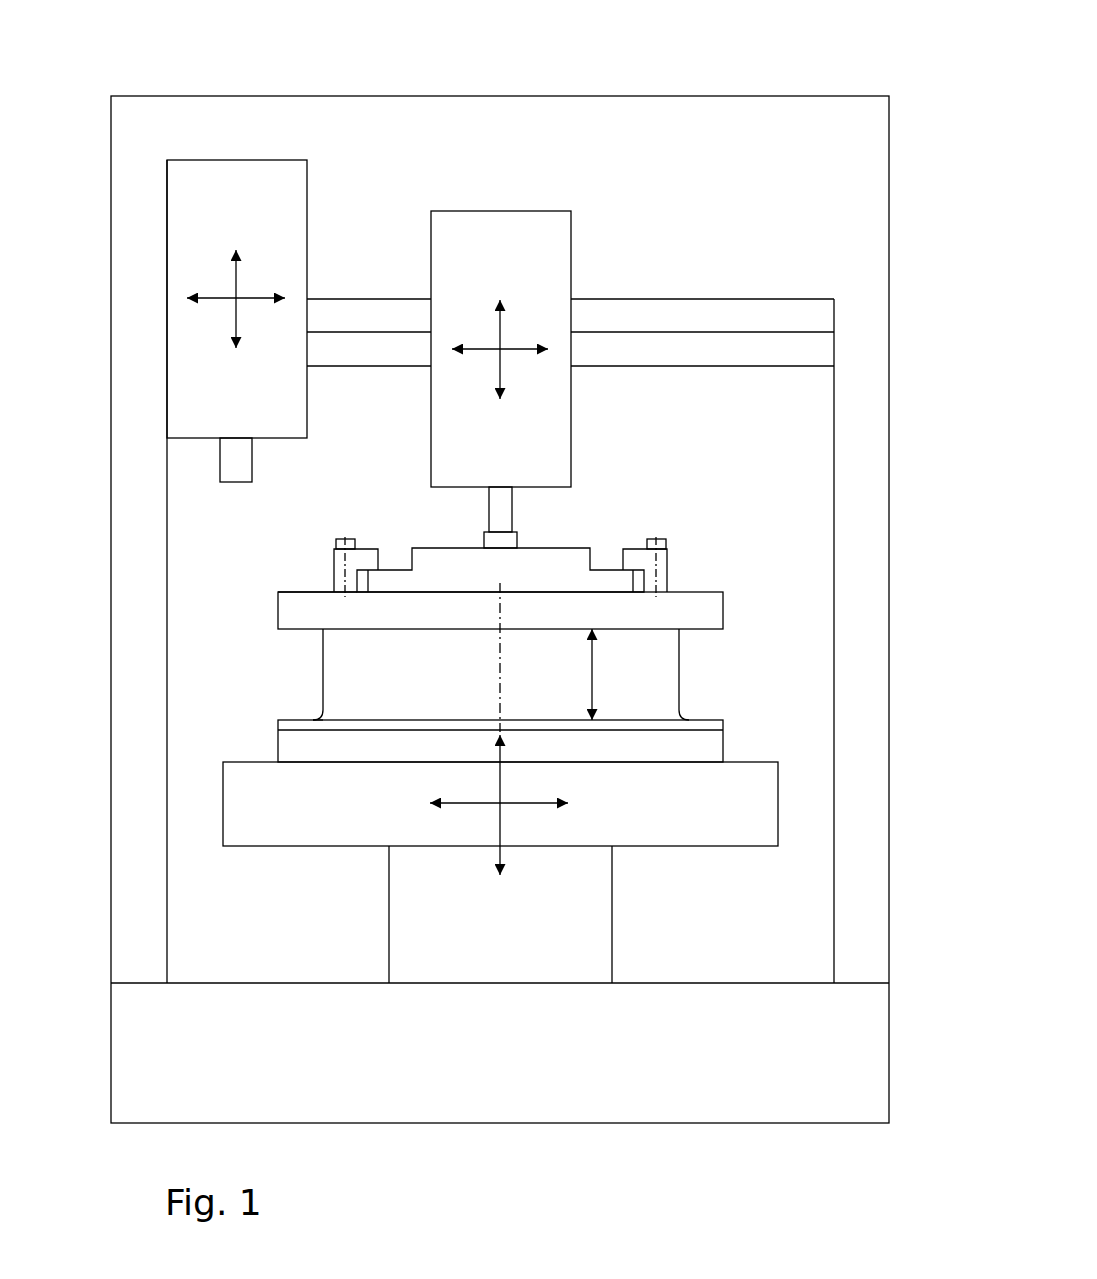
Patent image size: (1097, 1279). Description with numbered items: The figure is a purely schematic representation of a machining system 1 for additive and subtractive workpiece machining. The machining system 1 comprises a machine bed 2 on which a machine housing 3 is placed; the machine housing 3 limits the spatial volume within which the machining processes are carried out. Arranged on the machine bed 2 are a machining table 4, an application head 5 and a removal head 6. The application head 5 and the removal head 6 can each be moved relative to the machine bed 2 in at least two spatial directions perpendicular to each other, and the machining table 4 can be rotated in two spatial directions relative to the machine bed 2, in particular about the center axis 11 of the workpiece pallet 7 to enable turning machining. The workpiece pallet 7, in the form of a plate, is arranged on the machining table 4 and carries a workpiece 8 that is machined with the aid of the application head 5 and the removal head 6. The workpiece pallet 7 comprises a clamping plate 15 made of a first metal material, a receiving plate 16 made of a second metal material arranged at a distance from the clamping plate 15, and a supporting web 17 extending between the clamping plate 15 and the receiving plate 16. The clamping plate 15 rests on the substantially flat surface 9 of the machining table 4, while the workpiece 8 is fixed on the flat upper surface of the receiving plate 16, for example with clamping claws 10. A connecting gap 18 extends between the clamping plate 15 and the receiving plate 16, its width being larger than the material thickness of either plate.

The machining system 1 is at (808, 80).
The machine bed 2 is at (652, 1090).
The machine housing 3 is at (343, 95).
The machining table 4 is at (742, 808).
The application head 5 is at (222, 173).
The removal head 6 is at (521, 223).
The workpiece pallet 7 is at (695, 682).
The workpiece 8 is at (557, 567).
The flat surface 9 is at (303, 592).
The clamping claws 10 is at (337, 557).
The center axis 11 is at (500, 690).
The clamping plate 15 is at (708, 747).
The receiving plate 16 is at (290, 615).
The supporting web 17 is at (340, 661).
The connecting gap 18 is at (586, 697).